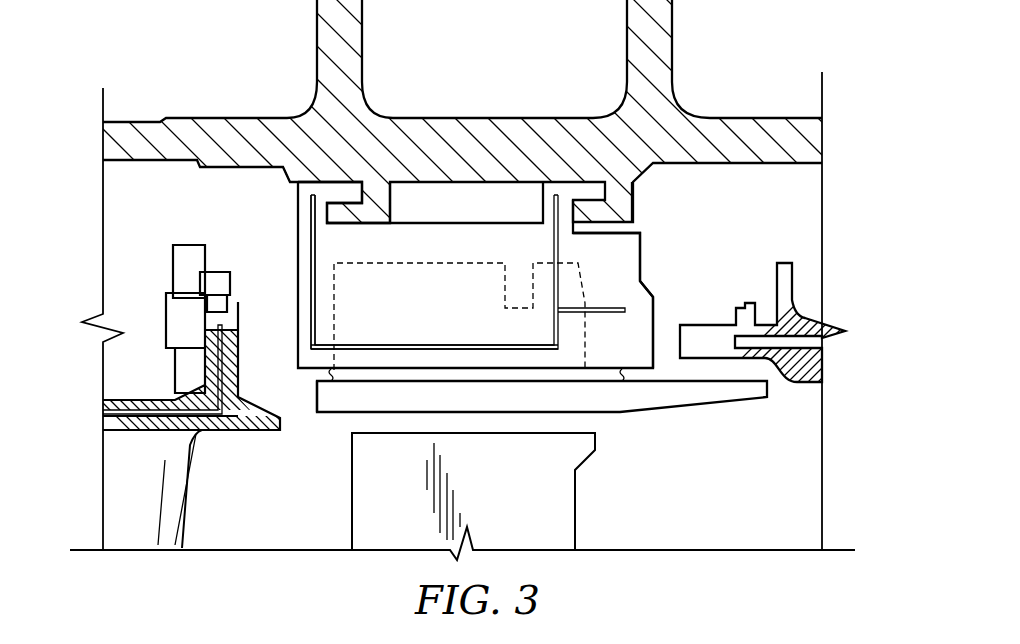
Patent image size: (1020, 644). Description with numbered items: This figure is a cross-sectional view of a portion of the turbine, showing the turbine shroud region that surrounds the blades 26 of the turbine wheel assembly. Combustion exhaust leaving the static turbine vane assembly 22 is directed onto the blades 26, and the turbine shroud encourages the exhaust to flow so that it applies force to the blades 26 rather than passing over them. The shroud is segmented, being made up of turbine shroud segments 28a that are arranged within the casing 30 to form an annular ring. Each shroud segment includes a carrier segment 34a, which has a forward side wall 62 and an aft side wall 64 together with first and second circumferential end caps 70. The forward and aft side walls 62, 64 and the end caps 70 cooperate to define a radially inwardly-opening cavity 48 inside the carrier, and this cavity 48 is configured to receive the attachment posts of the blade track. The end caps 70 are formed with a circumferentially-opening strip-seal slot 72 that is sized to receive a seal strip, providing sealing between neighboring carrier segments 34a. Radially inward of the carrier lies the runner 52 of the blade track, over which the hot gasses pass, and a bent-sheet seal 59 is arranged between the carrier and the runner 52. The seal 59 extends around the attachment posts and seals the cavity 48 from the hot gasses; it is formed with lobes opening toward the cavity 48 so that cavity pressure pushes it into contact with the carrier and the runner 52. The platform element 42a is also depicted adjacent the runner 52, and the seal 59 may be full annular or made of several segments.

The static turbine vane assembly 22 is at (181, 514).
The blades 26 is at (547, 537).
The turbine shroud segments 28a is at (262, 224).
The casing 30 is at (757, 140).
The carrier segments 34a is at (495, 248).
The rotor blade platform 42a is at (693, 400).
The radially inwardly-opening cavity 48 is at (517, 326).
The runner 52 is at (612, 397).
The bent-sheet seal 59 is at (336, 384).
The forward side wall 62 is at (295, 316).
The aft side wall 64 is at (646, 250).
The circumferential end caps 70 is at (435, 298).
The strip-seal slot 72 is at (350, 344).